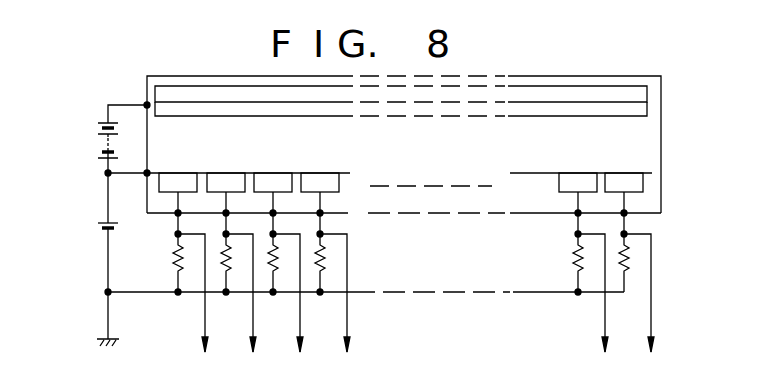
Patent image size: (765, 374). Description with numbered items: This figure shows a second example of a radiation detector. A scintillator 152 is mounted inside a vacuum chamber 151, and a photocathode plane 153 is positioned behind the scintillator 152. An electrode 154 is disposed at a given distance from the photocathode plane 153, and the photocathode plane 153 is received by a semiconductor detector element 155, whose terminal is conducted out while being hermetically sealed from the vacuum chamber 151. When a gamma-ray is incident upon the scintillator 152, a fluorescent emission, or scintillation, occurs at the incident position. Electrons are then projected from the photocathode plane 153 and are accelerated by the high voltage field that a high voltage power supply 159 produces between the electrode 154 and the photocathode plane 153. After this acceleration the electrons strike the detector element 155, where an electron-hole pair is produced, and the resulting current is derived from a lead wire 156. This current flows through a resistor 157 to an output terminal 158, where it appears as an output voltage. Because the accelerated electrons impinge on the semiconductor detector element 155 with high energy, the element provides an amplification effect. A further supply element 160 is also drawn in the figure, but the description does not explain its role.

The vacuum chamber 151 is at (635, 76).
The scintillator 152 is at (649, 96).
The photocathode plane 153 is at (649, 112).
The electrode 154 is at (652, 173).
The semiconductor detector element 155 is at (643, 187).
The lead wire 156 is at (630, 205).
The resistor 157 is at (630, 266).
The output terminal 158 is at (651, 312).
The high voltage power supply 159 is at (99, 143).
The battery 160 is at (99, 226).